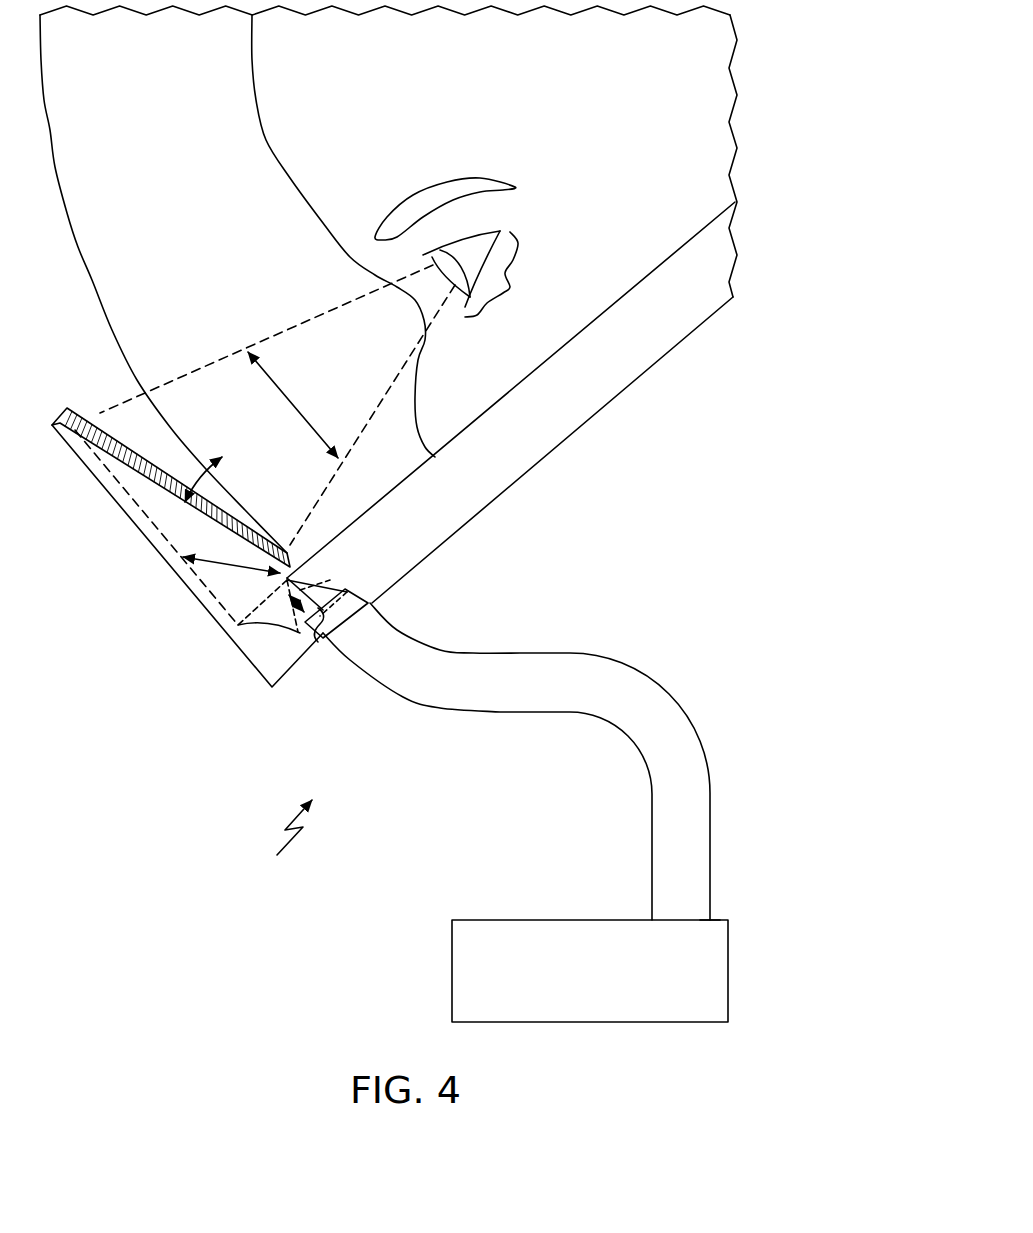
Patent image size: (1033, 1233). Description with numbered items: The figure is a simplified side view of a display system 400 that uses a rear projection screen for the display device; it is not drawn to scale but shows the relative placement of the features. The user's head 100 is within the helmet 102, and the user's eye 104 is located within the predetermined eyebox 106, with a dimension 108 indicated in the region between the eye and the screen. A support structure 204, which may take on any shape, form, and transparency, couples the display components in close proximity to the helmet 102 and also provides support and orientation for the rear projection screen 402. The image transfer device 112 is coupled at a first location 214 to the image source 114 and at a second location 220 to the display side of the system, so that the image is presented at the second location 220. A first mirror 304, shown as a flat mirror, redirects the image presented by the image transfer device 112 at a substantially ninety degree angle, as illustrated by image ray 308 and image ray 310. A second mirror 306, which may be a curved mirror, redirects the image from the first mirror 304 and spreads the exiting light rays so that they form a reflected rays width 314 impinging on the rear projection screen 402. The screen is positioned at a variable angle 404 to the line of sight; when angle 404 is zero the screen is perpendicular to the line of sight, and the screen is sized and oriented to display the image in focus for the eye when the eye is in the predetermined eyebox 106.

The user's head 100 is at (253, 90).
The helmet 102 is at (57, 168).
The user's eye 104 is at (480, 230).
The predetermined eyebox 106 is at (507, 291).
The eye box dimension 108 is at (287, 393).
The image transfer device 112 is at (563, 653).
The image source 114 is at (498, 920).
The support structure 204 is at (638, 373).
The first location 214 is at (712, 920).
The second location 220 is at (372, 600).
The first mirror 304 is at (330, 579).
The second mirror 306 is at (248, 635).
The image ray 308 is at (316, 645).
The image ray 310 is at (268, 600).
The reflected rays width 314 is at (243, 562).
The display system 400 is at (278, 840).
The rear projection screen 402 is at (110, 427).
The angle 404 is at (200, 458).